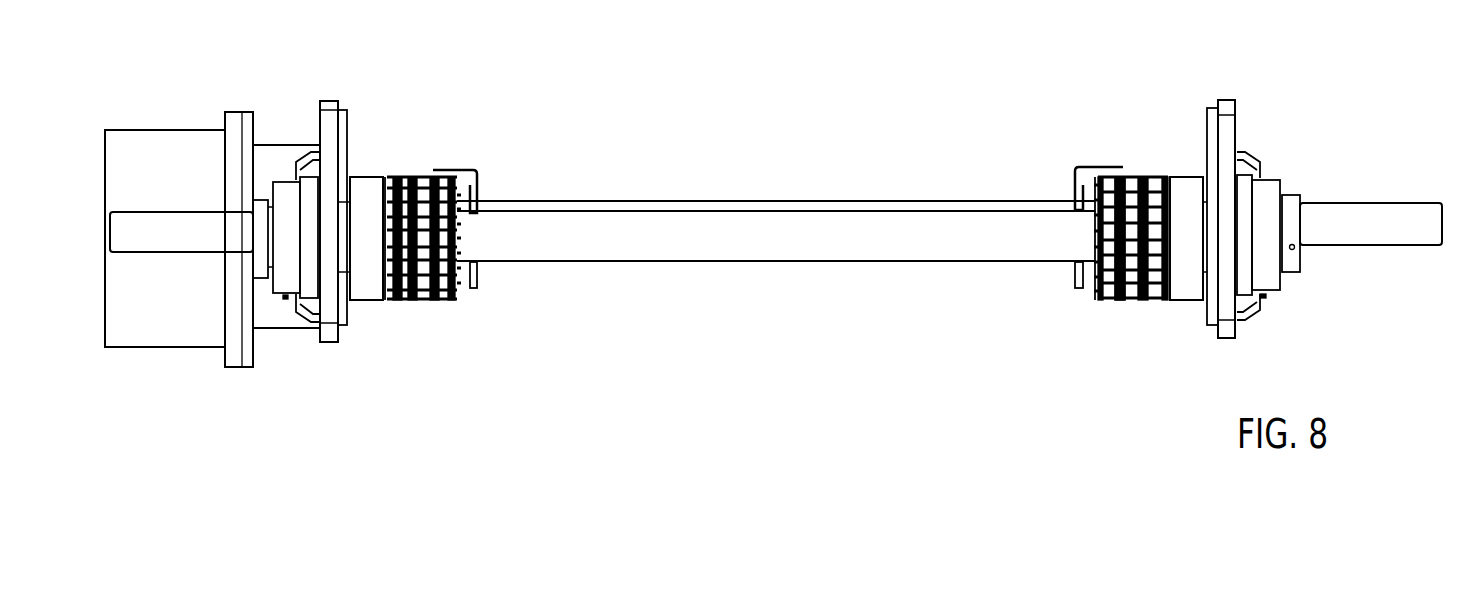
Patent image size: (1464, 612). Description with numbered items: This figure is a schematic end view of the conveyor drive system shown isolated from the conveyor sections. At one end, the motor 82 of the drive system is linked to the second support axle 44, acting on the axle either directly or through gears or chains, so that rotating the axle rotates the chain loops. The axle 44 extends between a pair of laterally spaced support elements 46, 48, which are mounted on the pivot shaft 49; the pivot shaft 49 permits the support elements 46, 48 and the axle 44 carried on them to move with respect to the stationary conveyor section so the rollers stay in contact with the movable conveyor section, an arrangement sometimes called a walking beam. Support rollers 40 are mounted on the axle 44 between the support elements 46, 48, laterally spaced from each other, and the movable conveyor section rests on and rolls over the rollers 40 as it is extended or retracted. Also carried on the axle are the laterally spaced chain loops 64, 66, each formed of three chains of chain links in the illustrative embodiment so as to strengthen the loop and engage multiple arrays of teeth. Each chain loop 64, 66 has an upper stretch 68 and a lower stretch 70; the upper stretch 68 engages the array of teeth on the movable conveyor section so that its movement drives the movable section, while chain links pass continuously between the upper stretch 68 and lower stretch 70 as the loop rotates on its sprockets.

The motor 82 is at (165, 153).
The pivot shaft 49 is at (175, 235).
The support element 48 is at (330, 102).
The support roller 40 is at (368, 177).
The chain loop 66 is at (418, 338).
The second support axle 44 is at (725, 238).
The chain loop 64 is at (1087, 308).
The lower stretch 70 is at (1133, 313).
The upper stretch 68 is at (1142, 163).
The support element 46 is at (1223, 105).